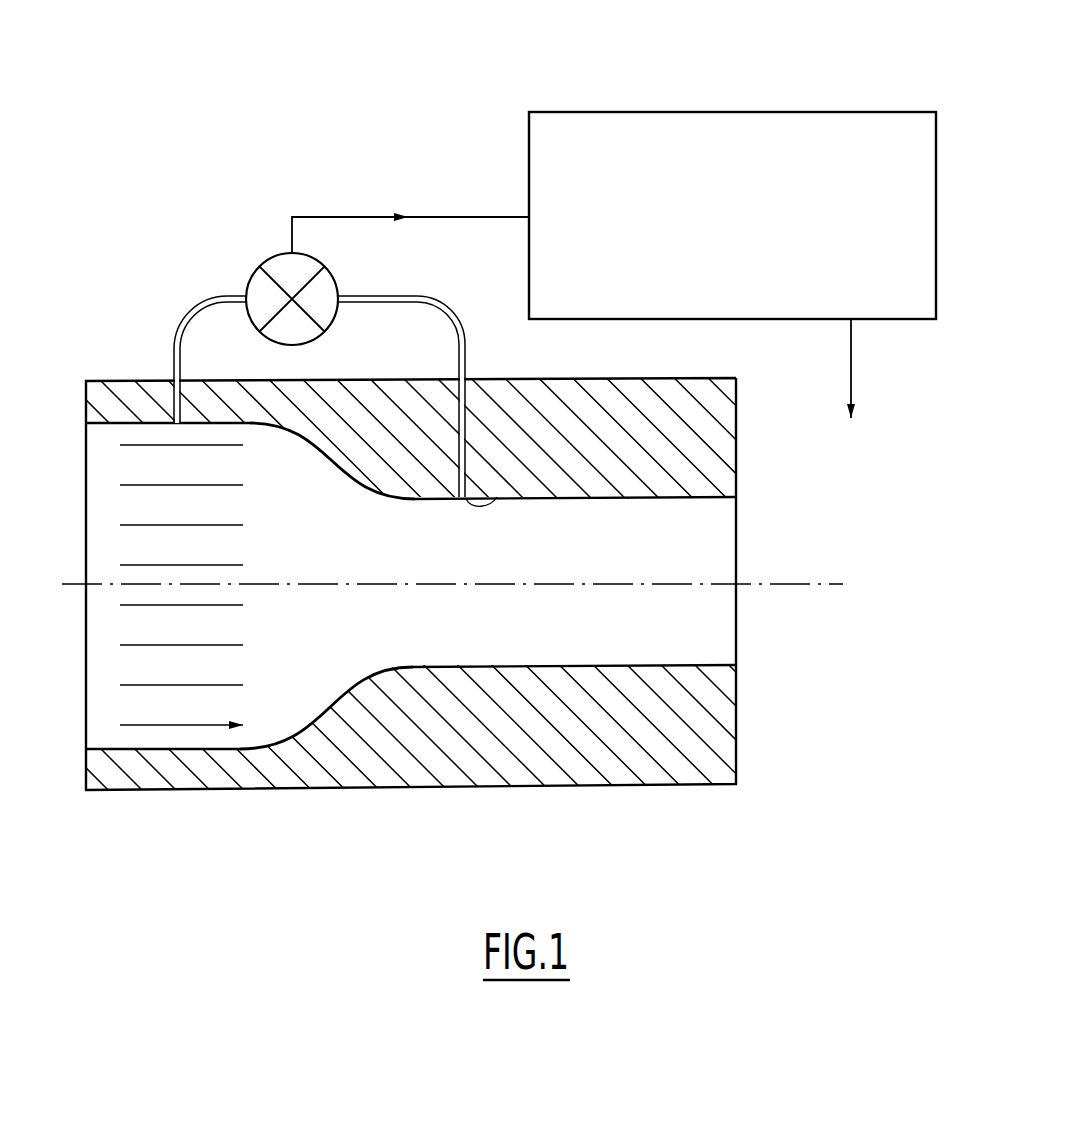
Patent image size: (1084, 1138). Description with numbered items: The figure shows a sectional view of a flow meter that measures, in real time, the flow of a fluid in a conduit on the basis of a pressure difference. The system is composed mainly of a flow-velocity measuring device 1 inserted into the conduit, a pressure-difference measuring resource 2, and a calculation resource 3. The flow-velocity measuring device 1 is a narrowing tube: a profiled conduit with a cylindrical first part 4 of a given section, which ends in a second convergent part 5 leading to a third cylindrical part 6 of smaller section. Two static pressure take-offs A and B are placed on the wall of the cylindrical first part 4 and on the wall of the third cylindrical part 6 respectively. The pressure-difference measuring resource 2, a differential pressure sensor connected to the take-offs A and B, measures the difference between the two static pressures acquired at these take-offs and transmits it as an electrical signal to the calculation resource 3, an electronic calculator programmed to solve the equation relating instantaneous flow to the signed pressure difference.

The flow-velocity measuring device 1 is at (125, 750).
The pressure-difference measuring resource 2 is at (268, 250).
The calculation resource 3 is at (694, 110).
The cylindrical first part 4 is at (222, 749).
The second convergent part 5 is at (310, 722).
The third cylindrical part 6 is at (528, 665).
The static pressure take-off A is at (177, 425).
The static pressure take-off B is at (497, 497).